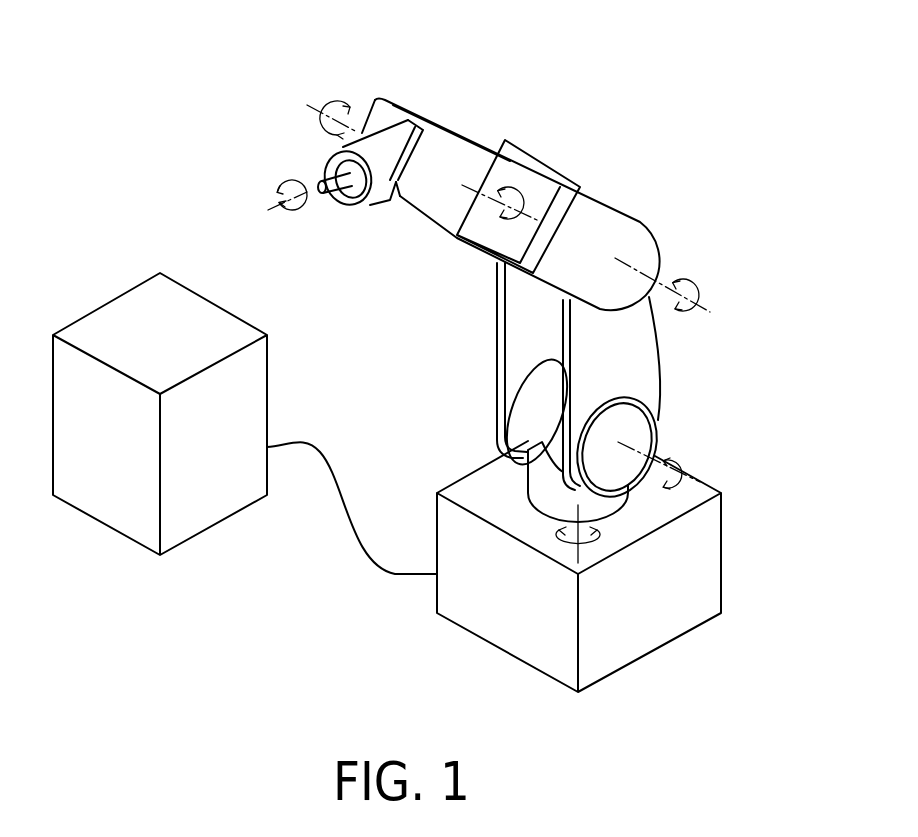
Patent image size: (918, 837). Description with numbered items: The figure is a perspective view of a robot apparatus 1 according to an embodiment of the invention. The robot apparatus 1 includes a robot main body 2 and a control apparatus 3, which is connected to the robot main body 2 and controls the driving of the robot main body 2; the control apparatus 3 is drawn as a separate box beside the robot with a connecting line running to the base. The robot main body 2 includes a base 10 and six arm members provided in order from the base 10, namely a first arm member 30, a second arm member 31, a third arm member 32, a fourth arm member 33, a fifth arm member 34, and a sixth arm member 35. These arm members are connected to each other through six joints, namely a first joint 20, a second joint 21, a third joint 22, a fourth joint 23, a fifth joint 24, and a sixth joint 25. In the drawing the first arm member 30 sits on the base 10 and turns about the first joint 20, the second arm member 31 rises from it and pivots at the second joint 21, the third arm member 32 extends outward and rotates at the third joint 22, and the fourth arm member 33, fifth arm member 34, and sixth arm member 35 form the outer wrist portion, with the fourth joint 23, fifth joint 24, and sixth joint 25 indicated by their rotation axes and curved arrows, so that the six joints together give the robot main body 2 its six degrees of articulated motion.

The robot apparatus 1 is at (172, 97).
The robot main body 2 is at (672, 210).
The control apparatus 3 is at (127, 308).
The base 10 is at (703, 557).
The first joint 20 is at (582, 553).
The second joint 21 is at (631, 437).
The third joint 22 is at (707, 305).
The fourth joint 23 is at (483, 187).
The fifth joint 24 is at (316, 100).
The sixth joint 25 is at (274, 219).
The first arm member 30 is at (547, 488).
The second arm member 31 is at (642, 353).
The third arm member 32 is at (613, 222).
The fourth arm member 33 is at (463, 158).
The fifth arm member 34 is at (392, 133).
The sixth arm member 35 is at (332, 188).